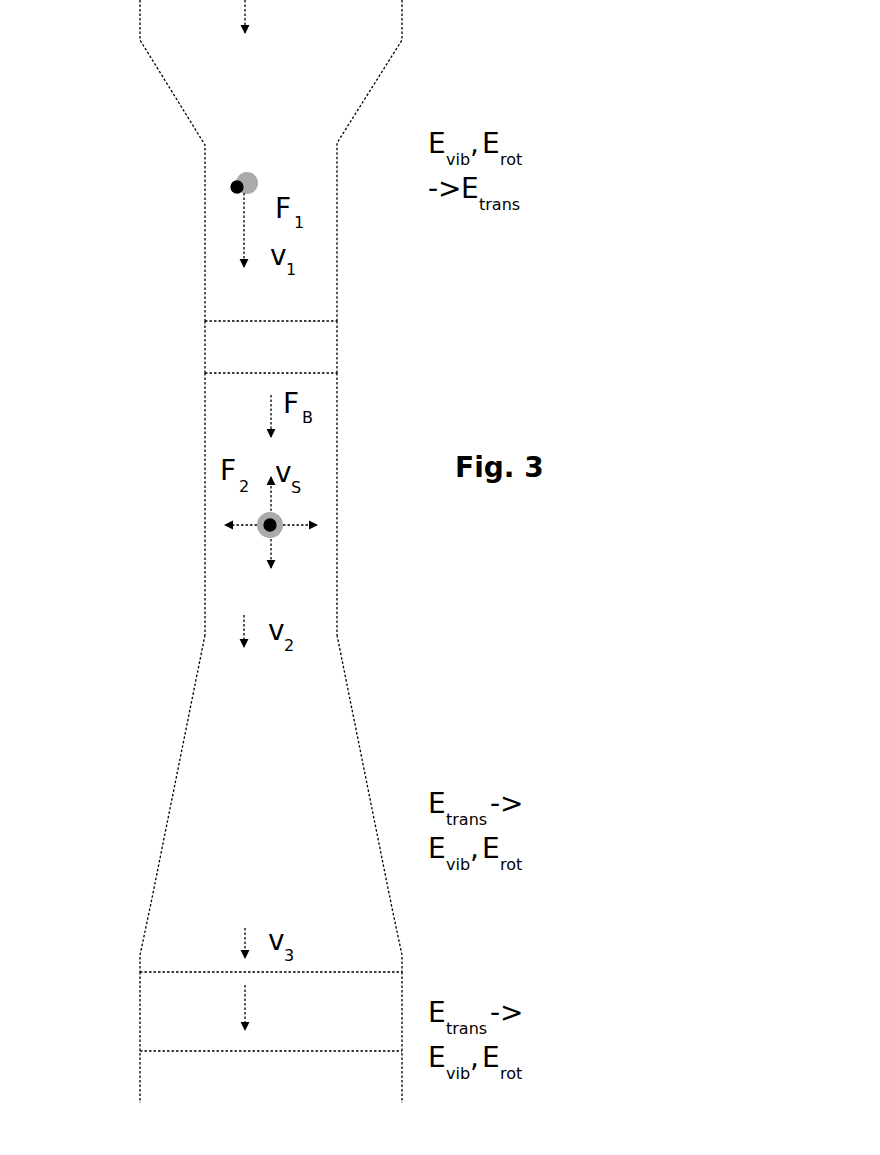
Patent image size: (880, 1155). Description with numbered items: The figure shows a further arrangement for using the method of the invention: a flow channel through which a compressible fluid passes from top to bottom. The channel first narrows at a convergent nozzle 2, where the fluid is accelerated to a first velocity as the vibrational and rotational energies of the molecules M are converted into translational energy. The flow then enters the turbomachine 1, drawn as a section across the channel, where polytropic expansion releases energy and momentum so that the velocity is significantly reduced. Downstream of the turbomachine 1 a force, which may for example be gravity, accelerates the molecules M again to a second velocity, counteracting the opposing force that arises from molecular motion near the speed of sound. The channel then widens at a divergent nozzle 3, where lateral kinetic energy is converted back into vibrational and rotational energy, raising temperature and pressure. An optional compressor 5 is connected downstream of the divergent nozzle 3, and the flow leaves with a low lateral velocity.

The turbomachine 1 is at (210, 357).
The convergent nozzle 2 is at (181, 121).
The divergent nozzle 3 is at (173, 764).
The compressor 5 is at (134, 1011).
The gas molecule M is at (230, 190).